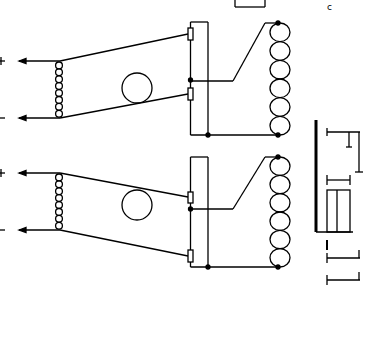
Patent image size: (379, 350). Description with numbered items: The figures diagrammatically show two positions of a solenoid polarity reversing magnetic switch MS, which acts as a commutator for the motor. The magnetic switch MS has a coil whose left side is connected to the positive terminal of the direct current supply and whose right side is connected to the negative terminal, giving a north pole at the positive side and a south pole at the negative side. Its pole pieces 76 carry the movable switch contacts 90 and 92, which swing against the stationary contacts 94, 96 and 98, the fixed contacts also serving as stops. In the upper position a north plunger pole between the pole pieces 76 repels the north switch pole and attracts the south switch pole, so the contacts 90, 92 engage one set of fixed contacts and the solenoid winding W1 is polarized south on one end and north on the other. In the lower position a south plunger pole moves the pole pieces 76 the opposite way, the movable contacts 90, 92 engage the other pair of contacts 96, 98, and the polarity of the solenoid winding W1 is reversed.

In FIG. 10, the pole piece 76 is at (102, 52).
In FIG. 11, the pole piece 76 is at (106, 182).
In FIG. 10, the movable switch contact 90 is at (195, 41).
In FIG. 11, the movable switch contact 90 is at (196, 191).
In FIG. 10, the movable switch contact 92 is at (196, 103).
In FIG. 11, the movable switch contact 92 is at (196, 249).
In FIG. 10, the stationary contact 94 is at (189, 23).
In FIG. 11, the stationary contact 94 is at (190, 165).
In FIG. 10, the stationary contact 96 is at (189, 80).
In FIG. 11, the stationary contact 96 is at (190, 210).
In FIG. 10, the stationary contact 98 is at (189, 131).
In FIG. 11, the stationary contact 98 is at (190, 265).
In FIG. 10, the magnetic switch MS is at (64, 98).
In FIG. 11, the magnetic switch MS is at (64, 212).
In FIG. 10, the solenoid winding W1 is at (288, 74).
In FIG. 11, the solenoid winding W1 is at (287, 217).